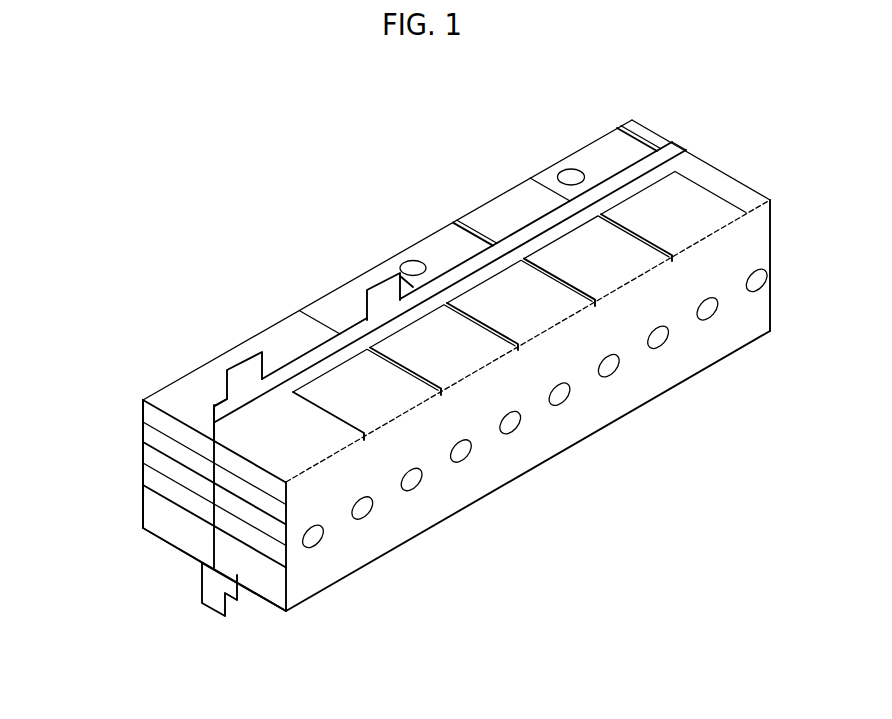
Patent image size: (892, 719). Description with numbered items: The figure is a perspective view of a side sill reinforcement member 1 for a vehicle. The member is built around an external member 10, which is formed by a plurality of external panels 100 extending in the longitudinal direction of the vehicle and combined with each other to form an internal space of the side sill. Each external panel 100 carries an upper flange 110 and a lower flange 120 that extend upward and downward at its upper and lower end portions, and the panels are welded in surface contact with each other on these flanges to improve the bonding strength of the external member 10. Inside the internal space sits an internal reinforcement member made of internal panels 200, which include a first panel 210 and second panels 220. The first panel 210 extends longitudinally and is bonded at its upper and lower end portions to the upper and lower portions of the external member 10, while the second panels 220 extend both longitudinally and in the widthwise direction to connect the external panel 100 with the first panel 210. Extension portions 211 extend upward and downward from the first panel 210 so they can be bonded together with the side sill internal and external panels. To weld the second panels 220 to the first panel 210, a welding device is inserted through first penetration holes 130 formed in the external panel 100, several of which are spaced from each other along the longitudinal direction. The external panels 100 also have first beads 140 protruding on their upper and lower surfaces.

The side sill reinforcement member 1 is at (205, 104).
The external member 10 is at (458, 192).
The external panel 100 is at (330, 305).
The upper flange 110 is at (215, 420).
The lower flange 120 is at (205, 585).
The first penetration hole 130 is at (568, 172).
The first bead 140 is at (598, 158).
The internal panel 200 is at (414, 518).
The first panel 210 is at (208, 540).
The extension portion 211 is at (365, 303).
The second panel 220 is at (168, 468).